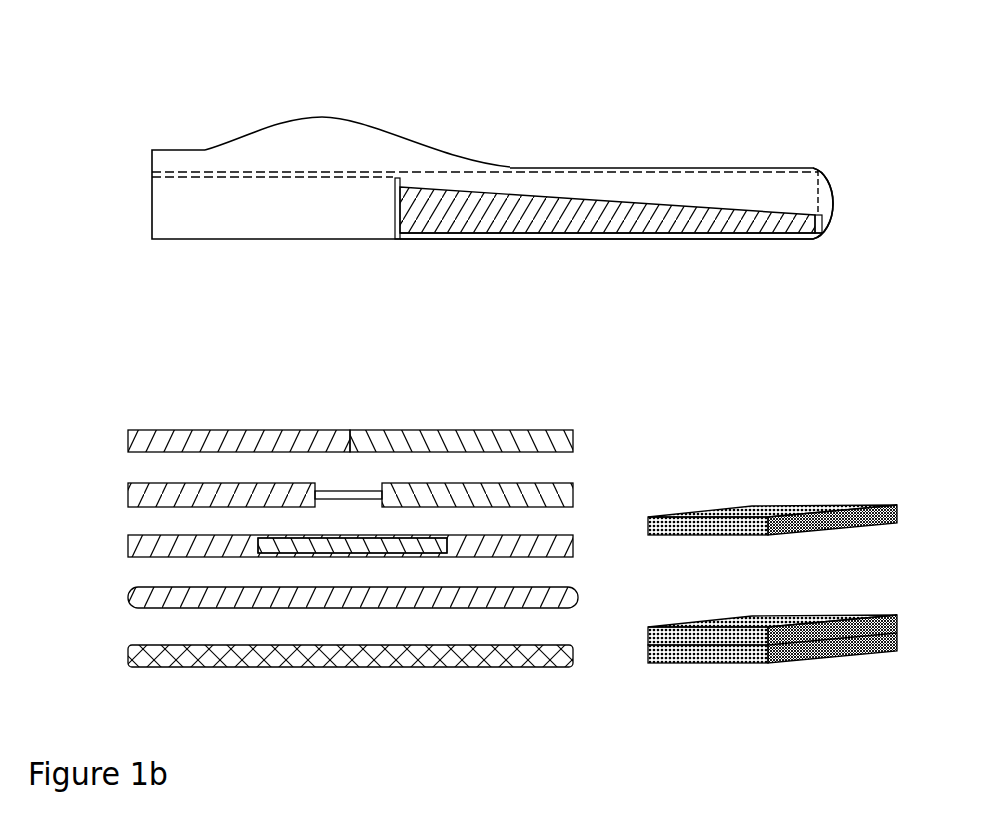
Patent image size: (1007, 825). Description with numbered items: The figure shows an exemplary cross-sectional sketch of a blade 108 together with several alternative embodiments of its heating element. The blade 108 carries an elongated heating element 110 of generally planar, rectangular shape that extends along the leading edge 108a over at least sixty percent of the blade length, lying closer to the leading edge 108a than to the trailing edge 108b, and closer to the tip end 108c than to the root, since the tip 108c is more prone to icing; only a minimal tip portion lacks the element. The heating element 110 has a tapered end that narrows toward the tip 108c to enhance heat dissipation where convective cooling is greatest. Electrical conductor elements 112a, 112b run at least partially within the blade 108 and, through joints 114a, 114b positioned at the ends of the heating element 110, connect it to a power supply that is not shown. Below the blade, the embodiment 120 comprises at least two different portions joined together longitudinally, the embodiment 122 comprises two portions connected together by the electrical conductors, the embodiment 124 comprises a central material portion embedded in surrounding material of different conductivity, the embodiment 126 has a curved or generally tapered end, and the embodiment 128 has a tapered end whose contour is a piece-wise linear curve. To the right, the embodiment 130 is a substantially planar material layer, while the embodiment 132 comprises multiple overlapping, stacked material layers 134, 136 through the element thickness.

The blade 108 is at (212, 203).
The leading edge 108a is at (527, 240).
The trailing edge 108b is at (520, 165).
The tip end 108c is at (835, 210).
The heating element 110 is at (657, 203).
The electrical conductor element 112a is at (330, 182).
The electrical conductor element 112b is at (302, 168).
The joint 114a is at (392, 178).
The joint 114b is at (820, 207).
The heating element embodiment with joined portions 120 is at (113, 450).
The heating element embodiment with conductor-connected portions 122 is at (113, 508).
The heating element embodiment with embedded portion 124 is at (113, 560).
The heating element embodiment with curved end 126 is at (113, 611).
The heating element embodiment with piece-wise linear tapered end 128 is at (113, 671).
The heating element embodiment with planar layer 130 is at (727, 513).
The heating element embodiment with stacked layers 132 is at (857, 610).
The material layer 134 is at (692, 628).
The material layer 136 is at (683, 662).